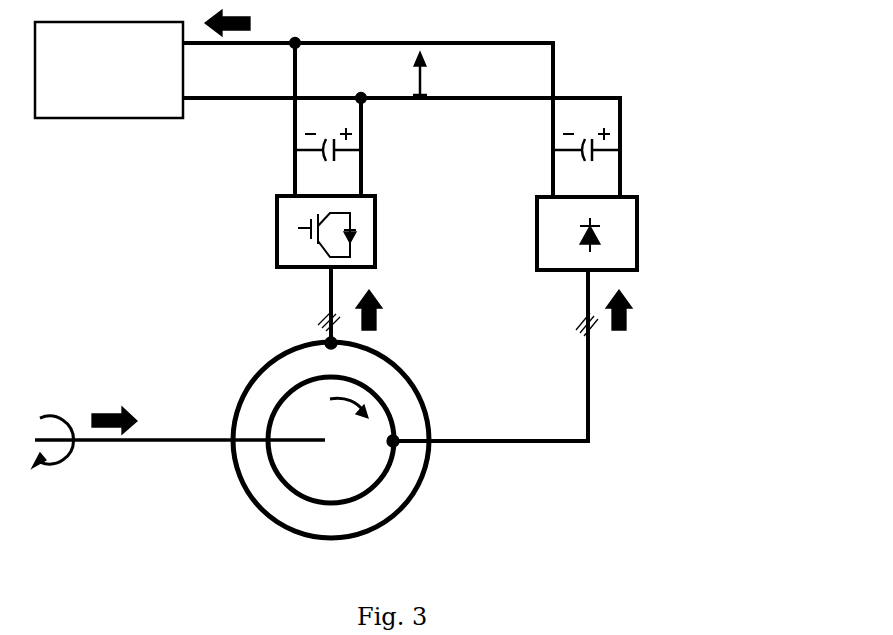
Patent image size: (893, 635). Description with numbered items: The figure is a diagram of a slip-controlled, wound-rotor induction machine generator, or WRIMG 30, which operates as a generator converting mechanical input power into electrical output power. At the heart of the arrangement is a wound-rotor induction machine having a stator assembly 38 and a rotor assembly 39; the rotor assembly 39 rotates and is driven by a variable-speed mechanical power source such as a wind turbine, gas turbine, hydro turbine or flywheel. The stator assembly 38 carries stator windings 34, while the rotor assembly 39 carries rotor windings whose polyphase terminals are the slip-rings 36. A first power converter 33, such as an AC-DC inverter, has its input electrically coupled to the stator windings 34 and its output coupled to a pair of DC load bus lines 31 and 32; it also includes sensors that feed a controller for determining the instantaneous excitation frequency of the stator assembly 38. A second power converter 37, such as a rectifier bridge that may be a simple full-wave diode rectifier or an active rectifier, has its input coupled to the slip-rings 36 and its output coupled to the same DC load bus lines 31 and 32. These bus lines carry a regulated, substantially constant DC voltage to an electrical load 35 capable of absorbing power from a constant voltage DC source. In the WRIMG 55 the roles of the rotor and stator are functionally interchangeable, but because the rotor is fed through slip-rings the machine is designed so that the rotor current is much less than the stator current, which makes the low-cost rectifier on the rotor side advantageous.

The wound-rotor induction machine generator 30 is at (728, 115).
The DC load bus line 31 is at (532, 43).
The DC load bus line 32 is at (594, 98).
The first power converter 33 is at (375, 228).
The stator windings 34 is at (331, 328).
The electrical load 35 is at (138, 118).
The rotor windings / slip-rings 36 is at (398, 445).
The second power converter 37 is at (637, 216).
The stator assembly 38 is at (242, 396).
The rotor assembly 39 is at (376, 396).
The wound-rotor induction machine generator 55 is at (175, 513).